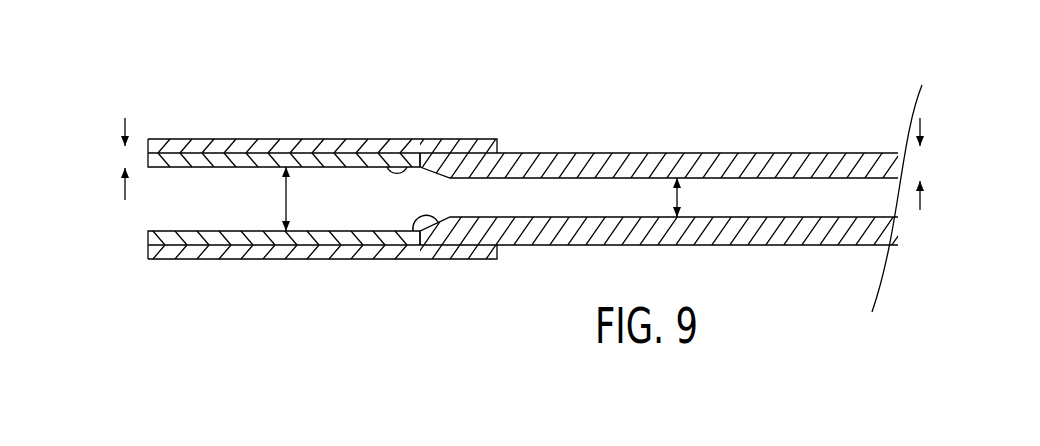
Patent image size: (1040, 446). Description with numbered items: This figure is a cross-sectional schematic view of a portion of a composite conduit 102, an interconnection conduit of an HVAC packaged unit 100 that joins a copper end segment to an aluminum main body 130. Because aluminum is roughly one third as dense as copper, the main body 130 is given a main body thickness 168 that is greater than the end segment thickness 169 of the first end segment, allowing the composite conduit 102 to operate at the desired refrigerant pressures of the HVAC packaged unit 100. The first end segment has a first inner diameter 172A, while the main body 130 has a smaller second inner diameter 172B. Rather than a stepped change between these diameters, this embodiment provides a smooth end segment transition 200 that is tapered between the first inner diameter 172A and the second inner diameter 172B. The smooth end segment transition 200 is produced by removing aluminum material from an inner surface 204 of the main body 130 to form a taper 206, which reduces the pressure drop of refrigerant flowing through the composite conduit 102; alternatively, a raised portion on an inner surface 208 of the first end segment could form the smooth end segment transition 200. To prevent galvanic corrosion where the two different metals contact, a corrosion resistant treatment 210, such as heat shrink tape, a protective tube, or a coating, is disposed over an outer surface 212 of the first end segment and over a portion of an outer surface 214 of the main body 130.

The HVAC packaged unit 100 is at (646, 59).
The composite conduit 102 is at (628, 99).
The main body 130 is at (662, 150).
The main body thickness 168 is at (920, 118).
The end segment thickness 169 is at (125, 118).
The first inner diameter 172A is at (283, 198).
The second inner diameter 172B is at (681, 197).
The smooth end segment transition 200 is at (421, 175).
The inner surface of the main body 204 is at (548, 216).
The taper 206 is at (412, 231).
The inner surface of the first end segment 208 is at (392, 166).
The corrosion resistant treatment 210 is at (323, 137).
The outer surface of the first end segment 212 is at (220, 152).
The outer surface of the main body 214 is at (453, 147).